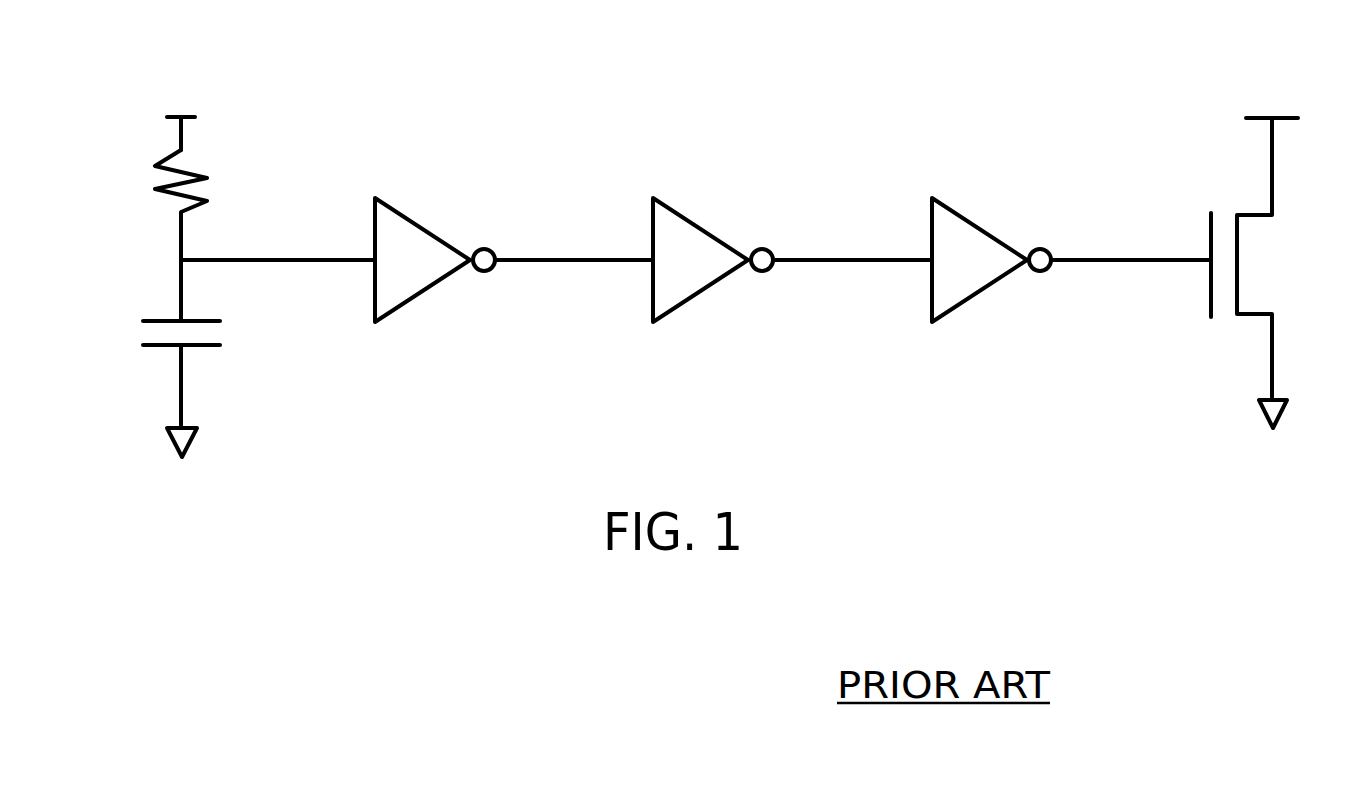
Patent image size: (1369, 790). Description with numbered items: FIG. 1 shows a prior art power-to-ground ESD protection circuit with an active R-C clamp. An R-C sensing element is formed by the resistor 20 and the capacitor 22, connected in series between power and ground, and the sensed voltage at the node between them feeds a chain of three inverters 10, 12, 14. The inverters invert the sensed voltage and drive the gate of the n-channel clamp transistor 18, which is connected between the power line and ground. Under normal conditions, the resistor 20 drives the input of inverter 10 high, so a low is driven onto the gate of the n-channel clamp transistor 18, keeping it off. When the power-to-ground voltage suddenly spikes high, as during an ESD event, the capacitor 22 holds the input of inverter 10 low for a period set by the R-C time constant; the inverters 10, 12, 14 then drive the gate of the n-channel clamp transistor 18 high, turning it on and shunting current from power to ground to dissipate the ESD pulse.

The inverter 10 is at (425, 272).
The inverter 12 is at (703, 272).
The inverter 14 is at (982, 272).
The n-channel clamp transistor 18 is at (1246, 263).
The resistor 20 is at (203, 175).
The capacitor 22 is at (193, 346).